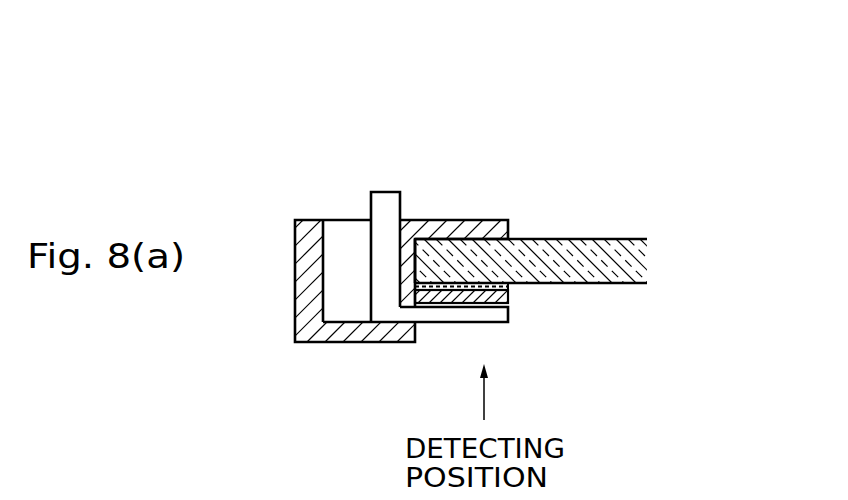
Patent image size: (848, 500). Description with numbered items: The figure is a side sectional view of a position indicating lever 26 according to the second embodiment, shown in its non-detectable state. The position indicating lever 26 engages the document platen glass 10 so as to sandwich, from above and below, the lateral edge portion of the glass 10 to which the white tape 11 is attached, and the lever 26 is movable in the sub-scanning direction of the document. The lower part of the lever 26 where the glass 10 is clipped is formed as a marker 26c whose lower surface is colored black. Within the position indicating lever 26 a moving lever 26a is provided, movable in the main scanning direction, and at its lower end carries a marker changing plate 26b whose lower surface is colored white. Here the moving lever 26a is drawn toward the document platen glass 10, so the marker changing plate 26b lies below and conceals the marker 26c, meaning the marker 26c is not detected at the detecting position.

The document platen glass 10 is at (577, 239).
The white tape 11 is at (497, 284).
The position indicating lever 26 is at (338, 158).
The moving lever 26a is at (390, 192).
The marker changing plate 26b is at (490, 323).
The marker 26c is at (508, 304).